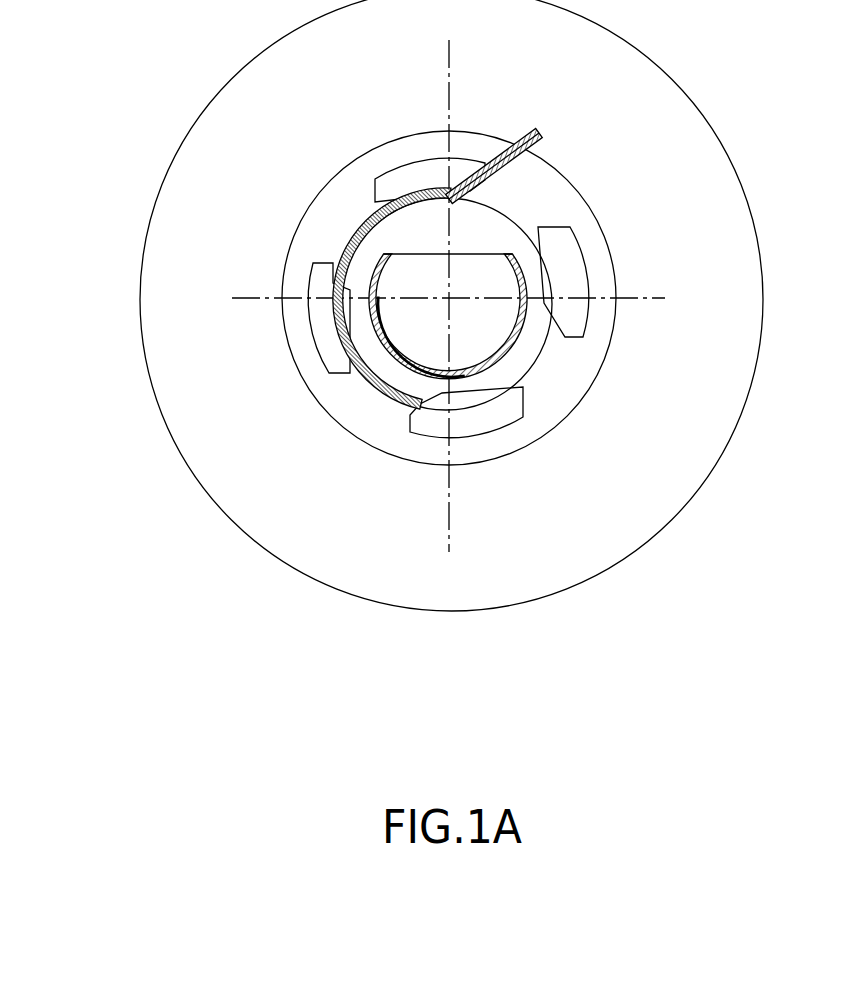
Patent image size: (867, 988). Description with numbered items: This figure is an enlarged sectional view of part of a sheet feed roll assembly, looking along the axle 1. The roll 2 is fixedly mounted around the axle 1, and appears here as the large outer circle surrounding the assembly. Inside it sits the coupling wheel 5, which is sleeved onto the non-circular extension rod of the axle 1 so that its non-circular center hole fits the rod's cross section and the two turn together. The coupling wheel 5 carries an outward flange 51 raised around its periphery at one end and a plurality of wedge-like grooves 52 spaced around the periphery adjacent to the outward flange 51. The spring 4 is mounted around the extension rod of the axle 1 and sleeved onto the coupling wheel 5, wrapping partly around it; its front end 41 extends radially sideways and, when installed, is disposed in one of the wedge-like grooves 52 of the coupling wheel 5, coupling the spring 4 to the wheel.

The axle 1 is at (478, 333).
The roll 2 is at (693, 388).
The spring 4 is at (340, 248).
The front end 41 is at (483, 163).
The coupling wheel 5 is at (530, 263).
The outward flange 51 is at (527, 188).
The wedge-like grooves 52 is at (553, 292).